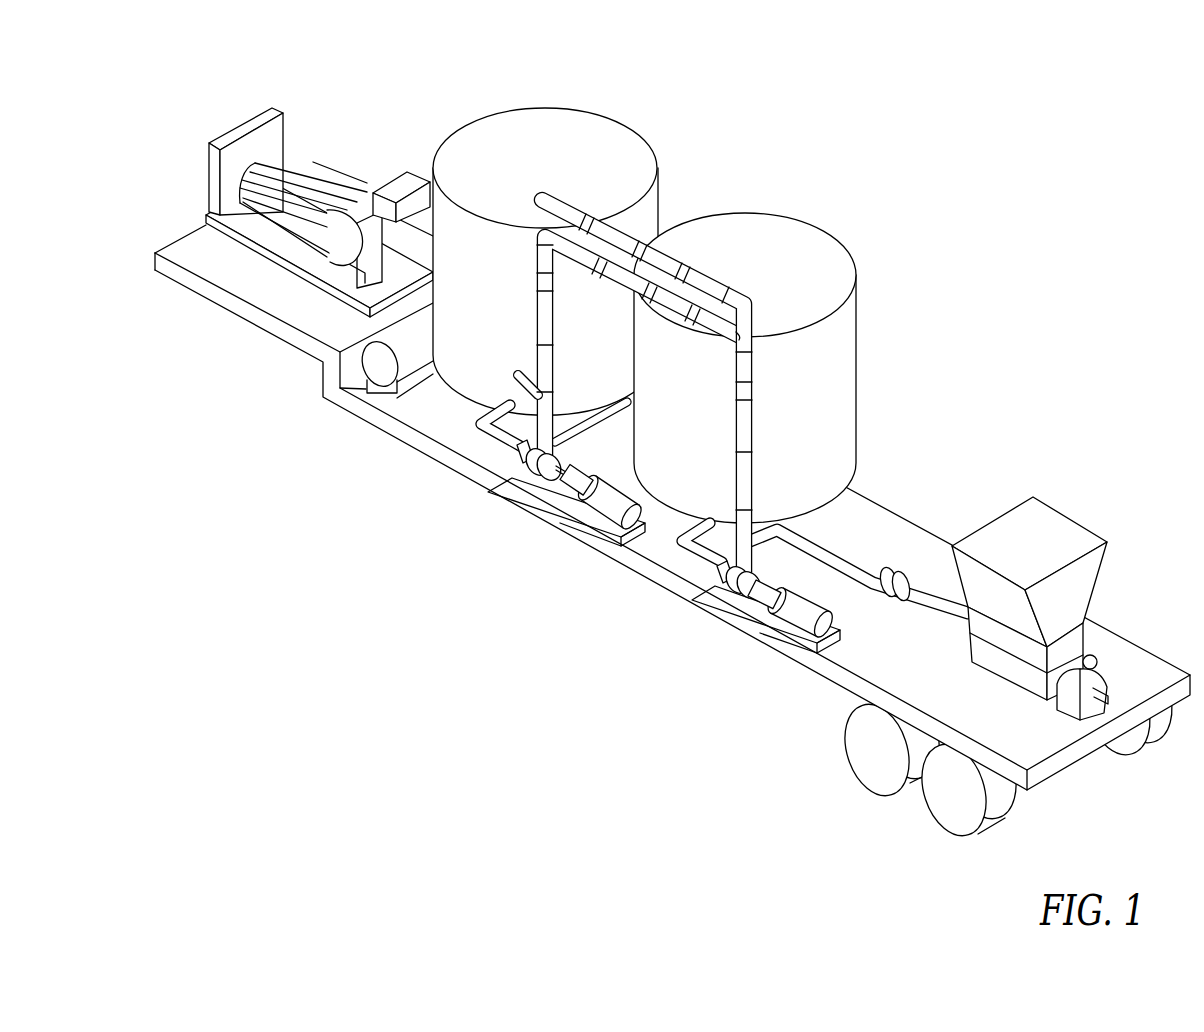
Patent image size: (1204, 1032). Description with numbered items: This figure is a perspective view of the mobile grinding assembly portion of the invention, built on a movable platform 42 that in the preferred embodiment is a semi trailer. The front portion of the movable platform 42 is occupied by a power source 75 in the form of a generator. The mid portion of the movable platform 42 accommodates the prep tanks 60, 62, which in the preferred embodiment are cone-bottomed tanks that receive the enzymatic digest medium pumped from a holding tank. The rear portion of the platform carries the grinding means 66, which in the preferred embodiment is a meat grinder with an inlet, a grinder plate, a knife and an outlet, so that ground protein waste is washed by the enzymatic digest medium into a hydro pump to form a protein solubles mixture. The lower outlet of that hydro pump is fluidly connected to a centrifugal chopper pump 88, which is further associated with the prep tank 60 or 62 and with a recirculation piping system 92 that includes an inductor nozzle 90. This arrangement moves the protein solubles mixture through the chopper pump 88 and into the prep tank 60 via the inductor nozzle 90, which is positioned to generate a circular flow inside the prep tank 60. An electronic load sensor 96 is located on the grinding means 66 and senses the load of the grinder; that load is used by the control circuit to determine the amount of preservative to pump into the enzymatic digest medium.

The movable platform 42 is at (363, 420).
The prep tank 60 is at (529, 108).
The prep tank 62 is at (791, 222).
The grinding means 66 is at (1014, 508).
The power source 75 is at (352, 118).
The centrifugal chopper pump 88 is at (607, 513).
The inductor nozzle 90 is at (493, 447).
The recirculation piping system 92 is at (563, 195).
The electronic load sensor 96 is at (1096, 656).